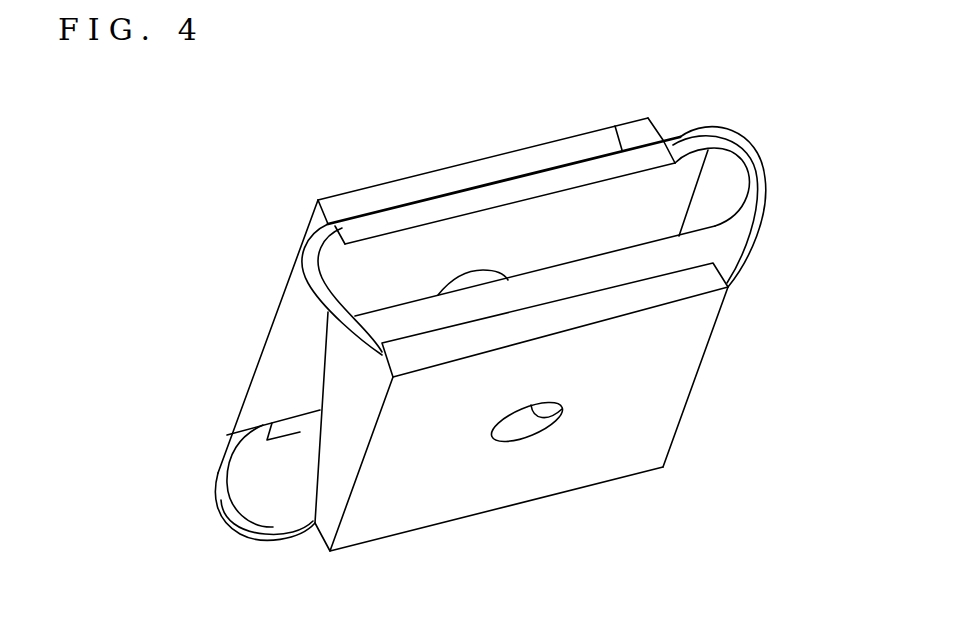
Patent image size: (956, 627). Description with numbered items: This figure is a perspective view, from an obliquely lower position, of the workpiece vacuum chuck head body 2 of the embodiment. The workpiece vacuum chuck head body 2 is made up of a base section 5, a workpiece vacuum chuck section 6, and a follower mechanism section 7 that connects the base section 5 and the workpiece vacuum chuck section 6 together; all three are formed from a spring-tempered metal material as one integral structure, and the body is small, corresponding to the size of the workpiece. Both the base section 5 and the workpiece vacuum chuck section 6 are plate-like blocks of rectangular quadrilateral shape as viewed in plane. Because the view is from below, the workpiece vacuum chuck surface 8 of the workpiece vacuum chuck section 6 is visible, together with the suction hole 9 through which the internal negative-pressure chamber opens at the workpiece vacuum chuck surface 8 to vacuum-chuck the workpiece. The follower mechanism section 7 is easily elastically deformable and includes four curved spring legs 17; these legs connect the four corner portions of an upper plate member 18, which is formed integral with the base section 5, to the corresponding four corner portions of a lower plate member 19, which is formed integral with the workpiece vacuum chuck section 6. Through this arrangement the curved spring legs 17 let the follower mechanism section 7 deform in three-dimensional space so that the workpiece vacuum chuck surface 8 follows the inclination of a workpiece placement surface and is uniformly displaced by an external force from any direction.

The workpiece vacuum chuck head body 2 is at (250, 280).
The base section 5 is at (496, 147).
The workpiece vacuum chuck section 6 is at (531, 472).
The follower mechanism section 7 is at (747, 137).
The workpiece vacuum chuck surface 8 is at (675, 380).
The suction hole 9 is at (562, 408).
The curved spring legs 17 is at (763, 177).
The upper plate member 18 is at (617, 163).
The lower plate member 19 is at (603, 273).